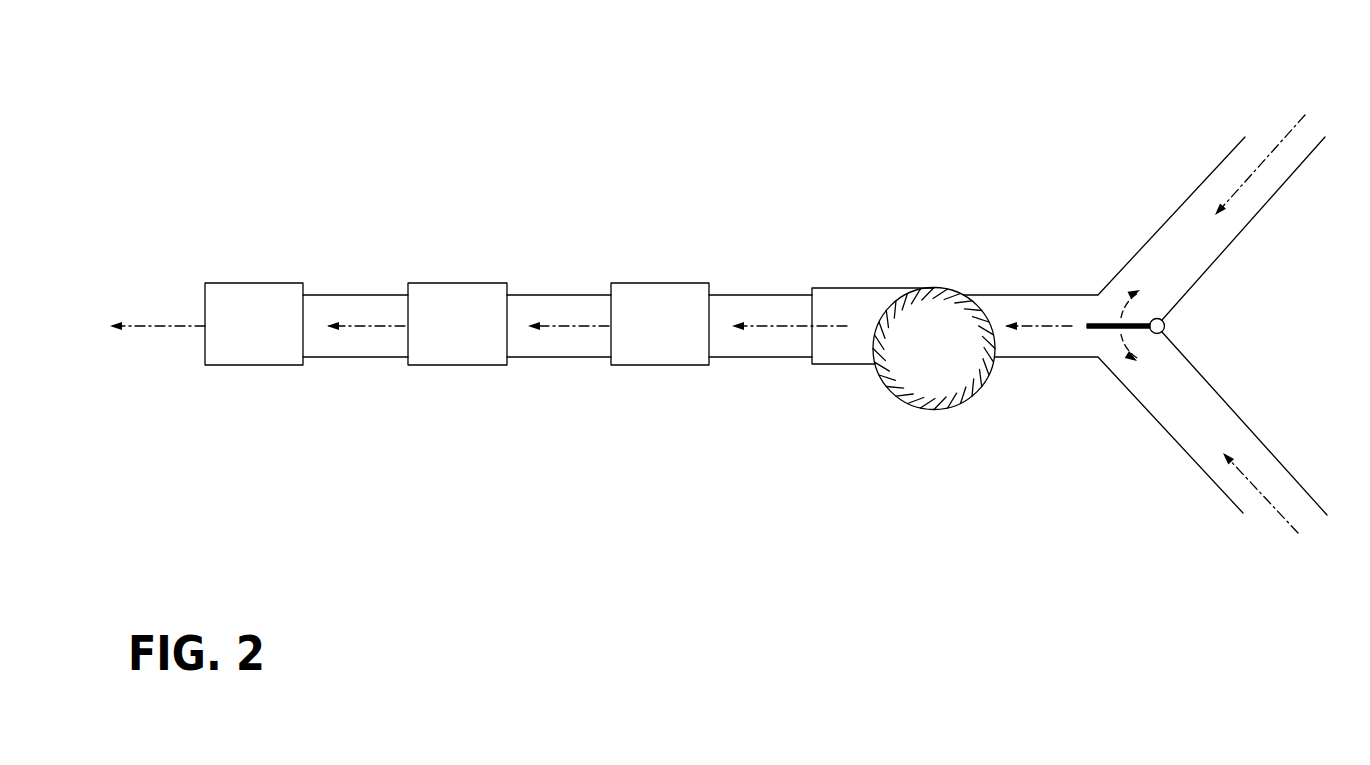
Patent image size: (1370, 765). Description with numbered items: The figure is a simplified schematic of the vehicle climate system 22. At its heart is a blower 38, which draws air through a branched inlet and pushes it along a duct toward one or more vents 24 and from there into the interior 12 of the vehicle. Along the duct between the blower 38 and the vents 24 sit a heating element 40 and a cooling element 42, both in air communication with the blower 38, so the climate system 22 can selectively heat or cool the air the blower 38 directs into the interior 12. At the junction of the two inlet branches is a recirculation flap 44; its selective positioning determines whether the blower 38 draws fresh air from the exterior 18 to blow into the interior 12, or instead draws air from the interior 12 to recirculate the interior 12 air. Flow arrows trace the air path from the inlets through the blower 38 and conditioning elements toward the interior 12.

The climate system 22 is at (170, 172).
The interior 12 is at (150, 325).
The vents 24 is at (247, 283).
The heating element 40 is at (453, 283).
The cooling element 42 is at (660, 283).
The blower 38 is at (887, 288).
The exterior 18 is at (1292, 132).
The recirculation flap 44 is at (1165, 323).